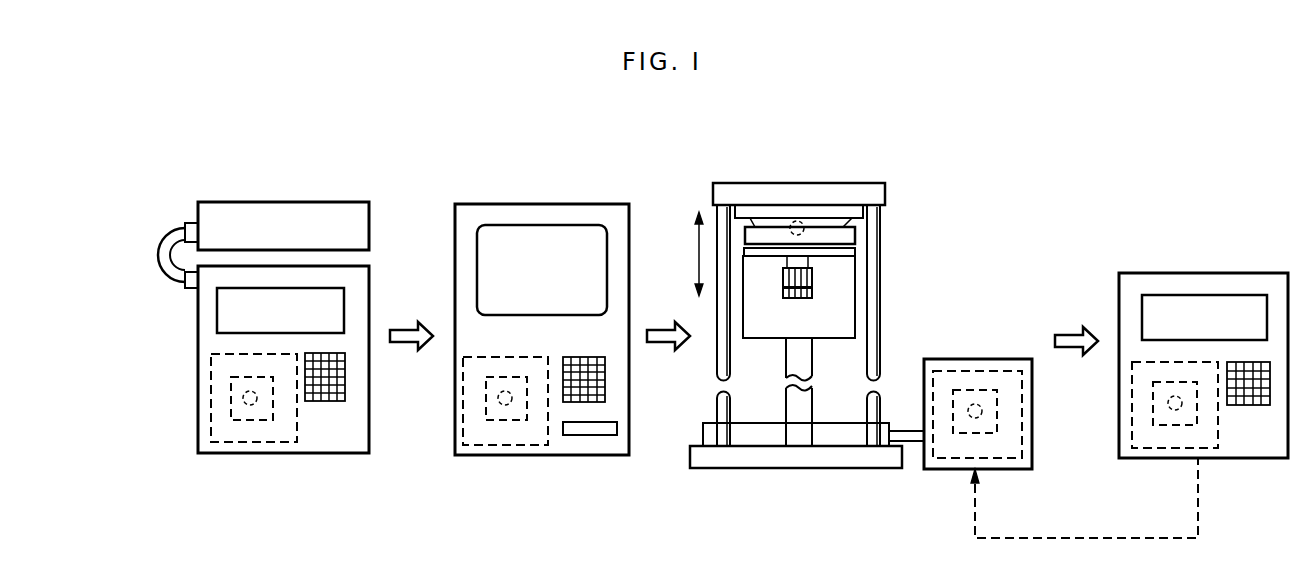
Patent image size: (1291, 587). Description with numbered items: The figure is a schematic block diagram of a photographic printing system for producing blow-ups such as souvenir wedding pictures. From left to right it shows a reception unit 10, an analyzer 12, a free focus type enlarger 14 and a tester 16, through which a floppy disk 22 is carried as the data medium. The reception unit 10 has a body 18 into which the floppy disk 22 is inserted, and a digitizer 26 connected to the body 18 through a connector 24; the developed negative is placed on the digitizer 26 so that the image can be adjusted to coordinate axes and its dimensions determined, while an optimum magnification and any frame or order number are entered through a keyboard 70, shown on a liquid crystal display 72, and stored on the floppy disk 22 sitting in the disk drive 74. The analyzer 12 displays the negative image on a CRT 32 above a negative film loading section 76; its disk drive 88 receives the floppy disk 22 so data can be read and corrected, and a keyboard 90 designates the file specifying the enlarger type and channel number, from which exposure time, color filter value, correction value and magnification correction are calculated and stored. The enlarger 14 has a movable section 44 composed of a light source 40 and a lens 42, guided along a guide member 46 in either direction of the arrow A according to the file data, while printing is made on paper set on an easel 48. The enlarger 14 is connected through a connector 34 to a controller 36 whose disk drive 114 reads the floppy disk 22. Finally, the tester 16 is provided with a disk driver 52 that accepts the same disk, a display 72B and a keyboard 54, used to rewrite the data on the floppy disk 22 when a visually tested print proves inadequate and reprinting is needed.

The reception unit 10 is at (168, 225).
The analyzer 12 is at (480, 204).
The free focus type enlarger 14 is at (761, 183).
The tester 16 is at (1132, 271).
The body 18 is at (195, 318).
The floppy disk 22 is at (231, 400).
The connector 24 is at (166, 277).
The digitizer 26 is at (345, 200).
The CRT 32 is at (553, 225).
The connector 34 is at (904, 431).
The controller 36 is at (997, 359).
The light source 40 is at (800, 226).
The lens 42 is at (812, 280).
The movable section 44 is at (855, 237).
The guide member 46 is at (880, 331).
The easel 48 is at (838, 446).
The disk driver 52 is at (1148, 449).
The keypad 54 is at (1245, 405).
The keyboard 70 is at (327, 401).
The liquid crystal display 72 is at (344, 303).
The display window 72B is at (1225, 295).
The disk drive 74 is at (226, 445).
The negative film loading section 76 is at (585, 435).
The disk drive 88 is at (490, 447).
The keyboard 90 is at (605, 397).
The disk drive 114 is at (1020, 430).
The arrow A is at (698, 251).